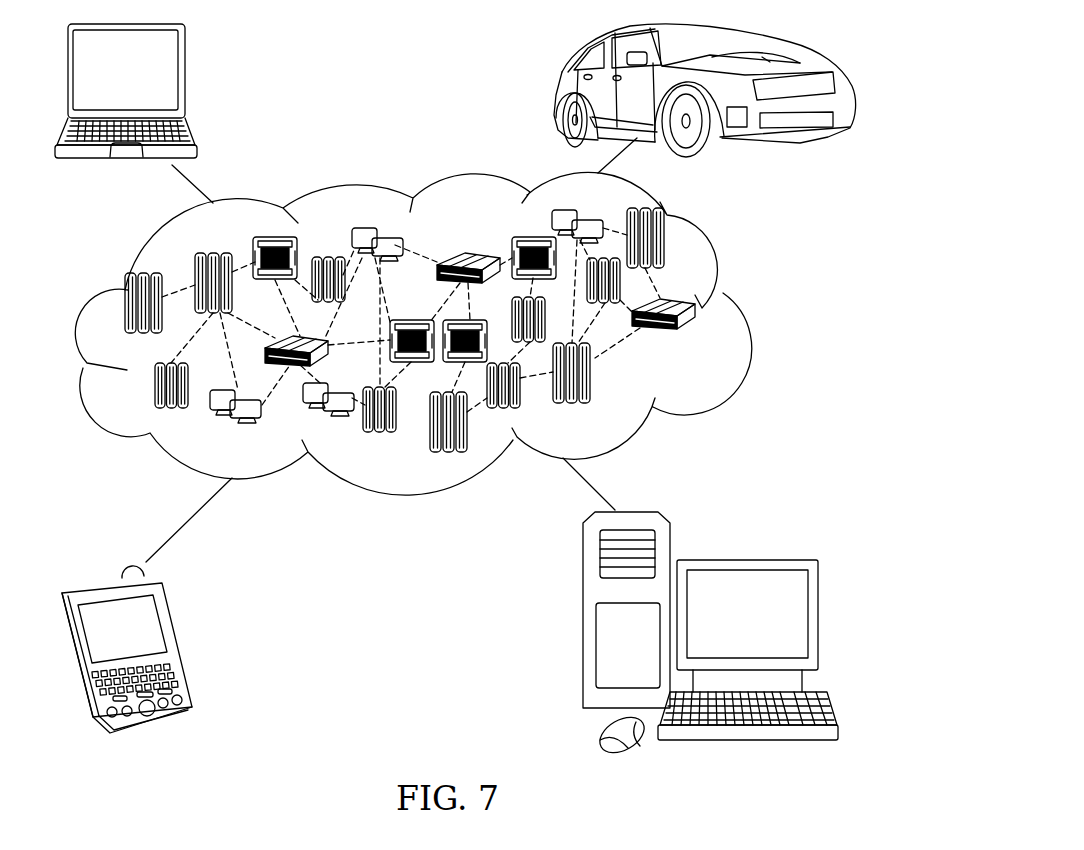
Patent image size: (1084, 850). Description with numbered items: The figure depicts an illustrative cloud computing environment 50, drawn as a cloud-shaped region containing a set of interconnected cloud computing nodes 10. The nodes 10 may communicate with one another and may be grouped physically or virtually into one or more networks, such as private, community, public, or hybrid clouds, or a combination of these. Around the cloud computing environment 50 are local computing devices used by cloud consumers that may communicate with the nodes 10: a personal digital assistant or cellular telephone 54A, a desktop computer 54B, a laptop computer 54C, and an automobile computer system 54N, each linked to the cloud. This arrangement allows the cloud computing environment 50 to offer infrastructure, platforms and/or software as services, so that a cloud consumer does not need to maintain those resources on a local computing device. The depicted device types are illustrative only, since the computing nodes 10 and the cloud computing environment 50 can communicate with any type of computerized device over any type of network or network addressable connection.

The cloud computing nodes 10 is at (712, 341).
The cloud computing environment 50 is at (745, 312).
The personal digital assistant or cellular telephone 54A is at (178, 640).
The desktop computer 54B is at (743, 560).
The laptop computer 54C is at (187, 78).
The automobile computer system 54N is at (560, 93).